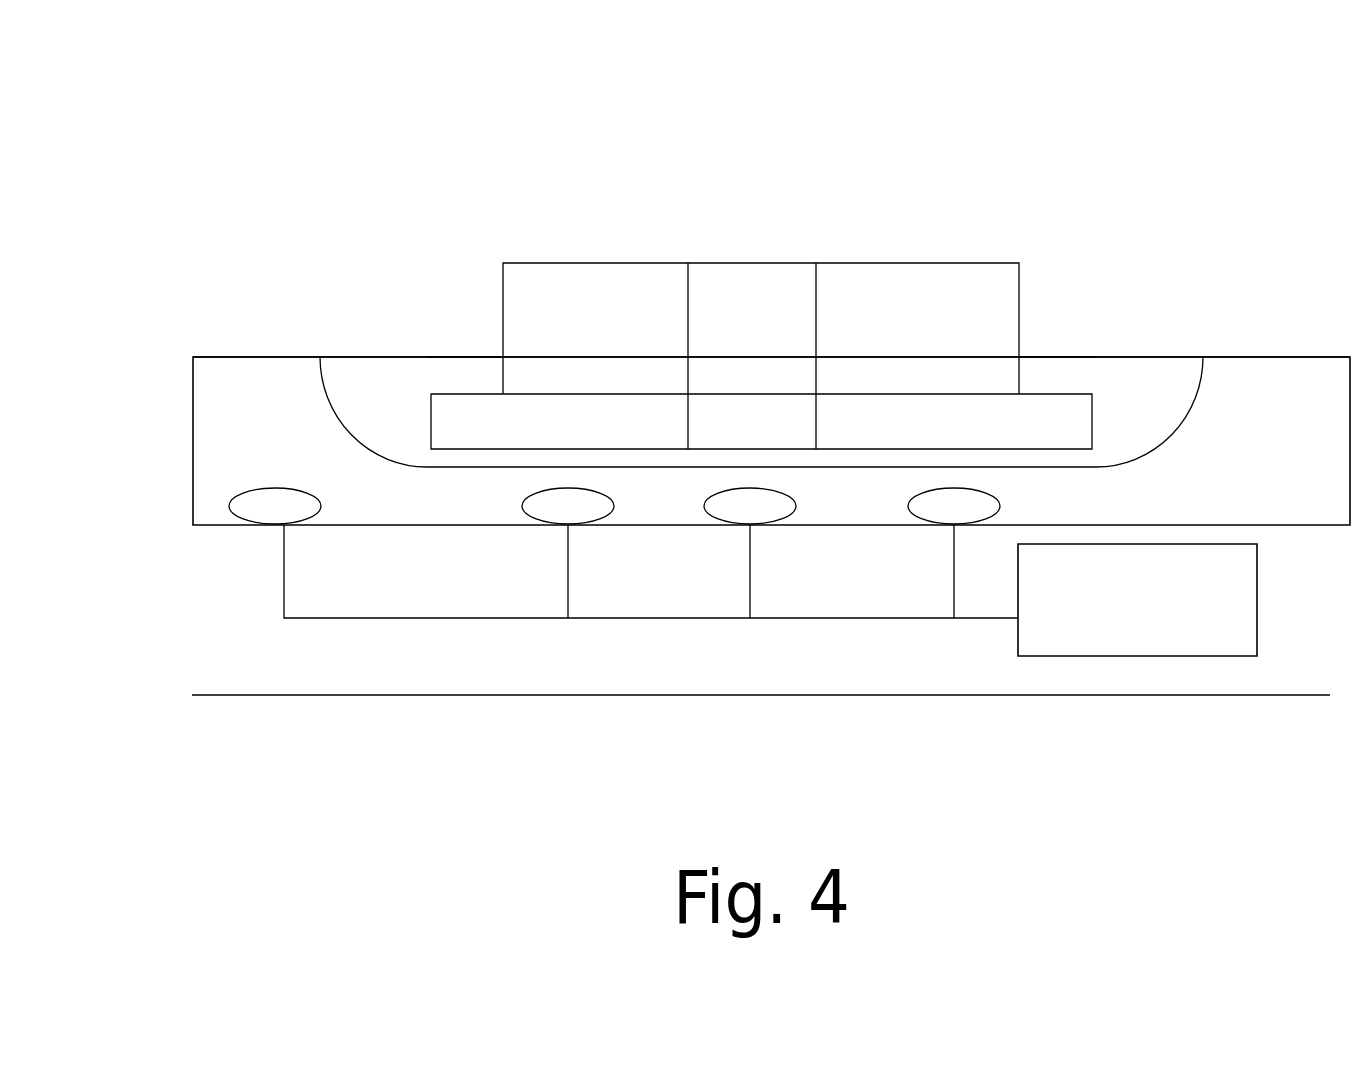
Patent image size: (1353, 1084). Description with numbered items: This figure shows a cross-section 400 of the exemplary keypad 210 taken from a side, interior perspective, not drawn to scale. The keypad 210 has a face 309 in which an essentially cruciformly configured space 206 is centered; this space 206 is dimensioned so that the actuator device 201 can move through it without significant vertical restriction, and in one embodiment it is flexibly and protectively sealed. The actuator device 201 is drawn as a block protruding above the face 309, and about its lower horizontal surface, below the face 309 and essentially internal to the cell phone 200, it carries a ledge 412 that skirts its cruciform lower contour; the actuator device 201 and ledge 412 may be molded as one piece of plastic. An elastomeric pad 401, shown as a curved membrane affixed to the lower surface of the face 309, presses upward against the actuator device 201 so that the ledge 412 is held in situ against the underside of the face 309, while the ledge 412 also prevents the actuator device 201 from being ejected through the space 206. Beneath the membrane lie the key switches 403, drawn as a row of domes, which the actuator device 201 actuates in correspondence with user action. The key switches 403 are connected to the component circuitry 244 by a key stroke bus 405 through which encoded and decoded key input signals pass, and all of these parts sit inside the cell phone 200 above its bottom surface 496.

The cross-section 400 is at (133, 82).
The keypad 210 is at (1306, 408).
The face 309 is at (375, 358).
The cruciformly configured space 206 is at (487, 358).
The elastomeric pad 401 is at (316, 392).
The actuator device 201 is at (634, 331).
The ledge 412 is at (488, 429).
The key switches 403 is at (280, 507).
The key stroke bus 405 is at (335, 620).
The component circuitry 244 is at (1223, 609).
The cell phone 200 is at (762, 716).
The bottom surface 496 is at (357, 697).